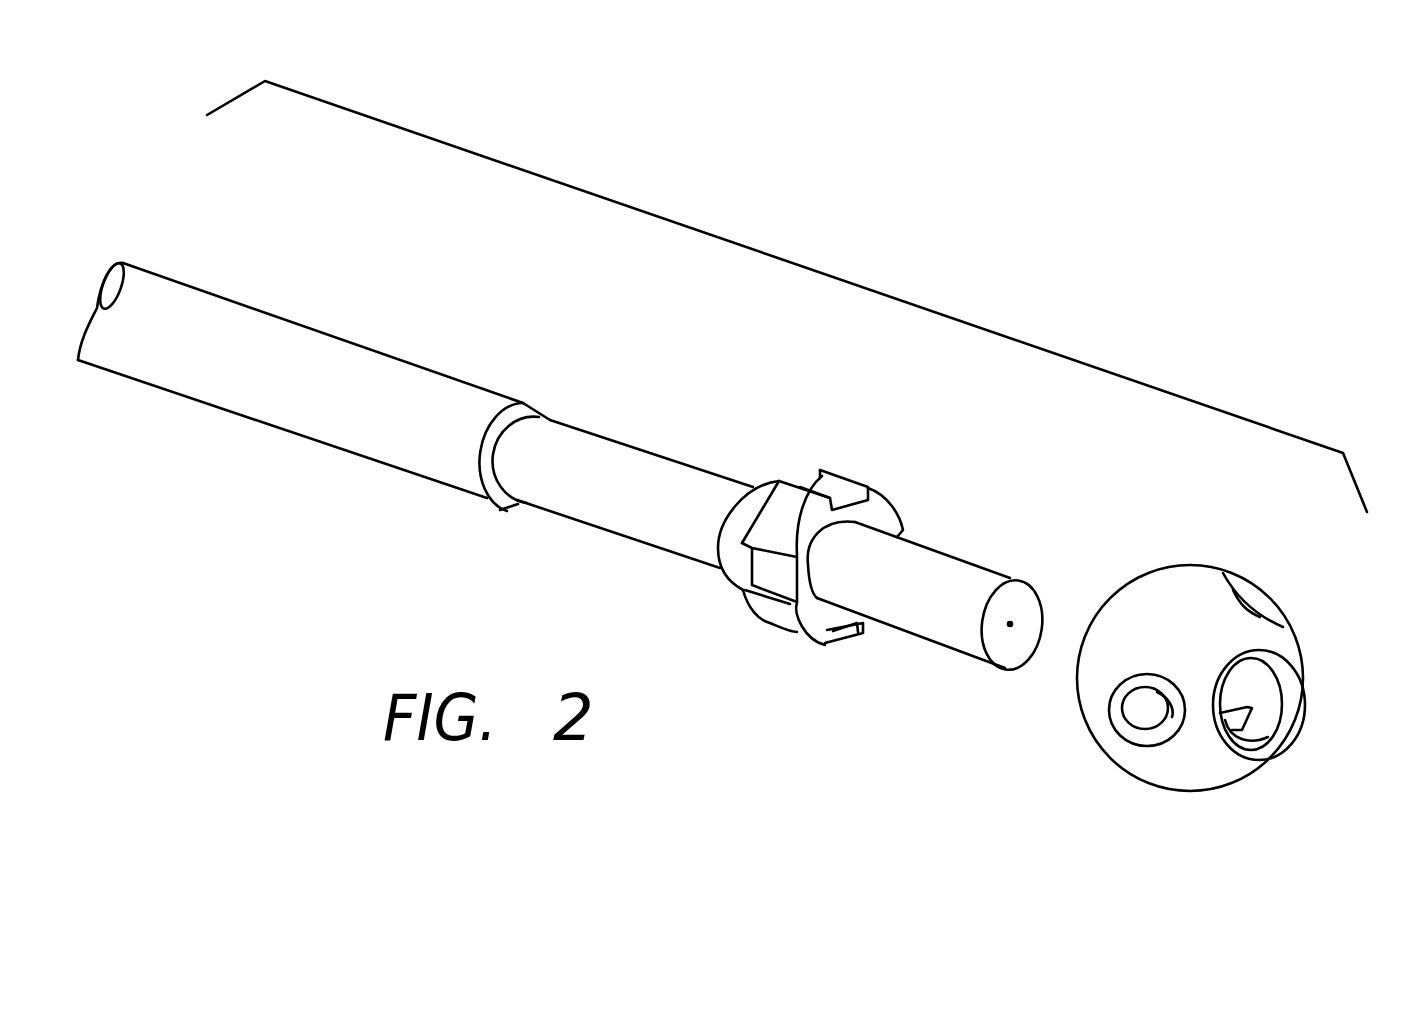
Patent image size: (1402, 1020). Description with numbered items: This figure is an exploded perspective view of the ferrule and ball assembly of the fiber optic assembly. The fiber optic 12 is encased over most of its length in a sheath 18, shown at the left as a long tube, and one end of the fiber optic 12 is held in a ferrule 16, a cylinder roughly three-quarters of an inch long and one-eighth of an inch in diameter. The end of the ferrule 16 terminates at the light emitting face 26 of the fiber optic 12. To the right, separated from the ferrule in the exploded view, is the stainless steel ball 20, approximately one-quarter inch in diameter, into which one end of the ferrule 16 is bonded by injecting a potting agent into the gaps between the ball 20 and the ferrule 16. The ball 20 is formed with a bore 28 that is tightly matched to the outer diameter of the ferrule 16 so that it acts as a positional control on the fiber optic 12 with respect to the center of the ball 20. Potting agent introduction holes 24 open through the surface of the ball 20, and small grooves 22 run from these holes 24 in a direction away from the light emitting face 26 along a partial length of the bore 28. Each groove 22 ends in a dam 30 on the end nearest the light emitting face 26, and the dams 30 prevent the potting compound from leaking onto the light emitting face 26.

The fiber optic 12 is at (1012, 622).
The ferrule 16 is at (933, 547).
The sheath 18 is at (388, 357).
The stainless steel ball 20 is at (1127, 777).
The grooves 22 is at (1298, 712).
The potting agent introduction holes 24 is at (1125, 720).
The light emitting face 26 is at (1032, 642).
The bore 28 is at (1278, 685).
The dam 30 is at (1287, 733).